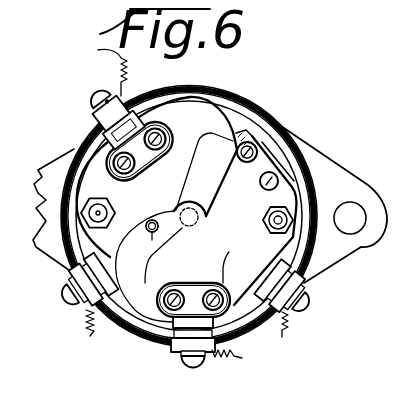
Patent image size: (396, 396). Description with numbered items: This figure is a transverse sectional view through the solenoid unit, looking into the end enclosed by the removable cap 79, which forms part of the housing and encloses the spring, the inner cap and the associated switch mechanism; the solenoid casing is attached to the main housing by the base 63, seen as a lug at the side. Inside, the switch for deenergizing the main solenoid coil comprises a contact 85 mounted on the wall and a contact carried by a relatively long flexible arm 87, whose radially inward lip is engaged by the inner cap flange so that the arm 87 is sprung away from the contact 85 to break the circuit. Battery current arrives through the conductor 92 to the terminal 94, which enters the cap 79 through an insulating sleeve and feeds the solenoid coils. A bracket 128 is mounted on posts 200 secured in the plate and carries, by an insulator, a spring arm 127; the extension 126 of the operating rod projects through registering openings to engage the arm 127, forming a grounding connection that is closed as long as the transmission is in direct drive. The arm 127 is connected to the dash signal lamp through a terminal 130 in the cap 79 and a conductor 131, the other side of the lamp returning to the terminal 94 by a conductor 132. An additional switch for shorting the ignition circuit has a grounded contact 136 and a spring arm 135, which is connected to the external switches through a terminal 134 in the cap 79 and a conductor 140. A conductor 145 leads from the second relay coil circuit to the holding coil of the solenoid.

The base 63 is at (336, 177).
The removable cap 79 is at (287, 128).
The contact 85 is at (248, 118).
The flexible arm 87 is at (164, 102).
The conductor 92 is at (83, 318).
The terminal 94 is at (63, 291).
The extension of the rod 126 is at (205, 214).
The spring arm 127 is at (208, 96).
The bracket 128 is at (265, 220).
The terminal 130 is at (98, 91).
The conductor 131 is at (98, 50).
The conductor 132 is at (90, 336).
The terminal 134 is at (183, 362).
The spring arm 135 is at (158, 243).
The contact 136 is at (153, 218).
The conductor 140 is at (242, 358).
The conductor 145 is at (282, 337).
The posts 200 is at (286, 225).